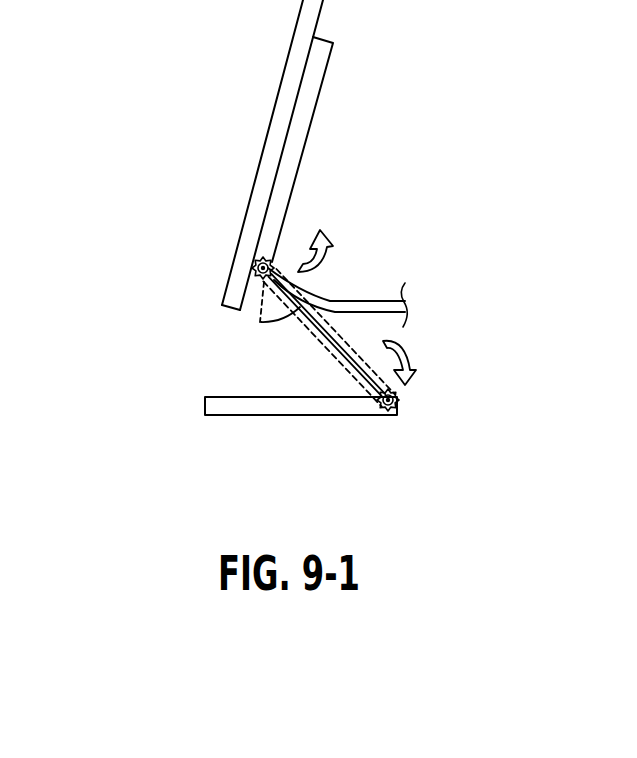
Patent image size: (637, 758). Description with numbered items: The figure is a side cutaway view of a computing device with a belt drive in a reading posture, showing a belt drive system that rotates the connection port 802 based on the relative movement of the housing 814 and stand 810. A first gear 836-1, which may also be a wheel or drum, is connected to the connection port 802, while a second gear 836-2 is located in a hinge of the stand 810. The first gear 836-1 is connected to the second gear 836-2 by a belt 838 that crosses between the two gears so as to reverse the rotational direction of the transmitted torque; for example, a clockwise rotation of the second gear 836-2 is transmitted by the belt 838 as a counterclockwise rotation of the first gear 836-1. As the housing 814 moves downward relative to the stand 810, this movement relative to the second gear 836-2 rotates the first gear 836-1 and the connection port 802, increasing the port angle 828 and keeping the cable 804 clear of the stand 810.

The housing 814 is at (297, 152).
The connection port 802 is at (293, 229).
The cable 804 is at (388, 301).
The belt 838 is at (338, 365).
The port angle 828 is at (269, 323).
The stand 810 is at (318, 415).
The first gear 836-1 is at (252, 268).
The second gear 836-2 is at (398, 402).